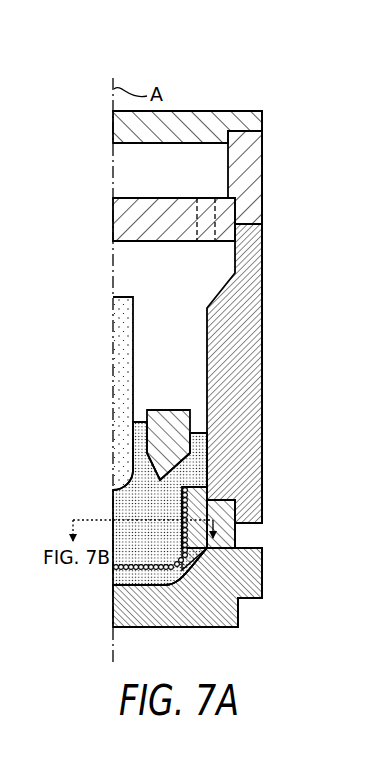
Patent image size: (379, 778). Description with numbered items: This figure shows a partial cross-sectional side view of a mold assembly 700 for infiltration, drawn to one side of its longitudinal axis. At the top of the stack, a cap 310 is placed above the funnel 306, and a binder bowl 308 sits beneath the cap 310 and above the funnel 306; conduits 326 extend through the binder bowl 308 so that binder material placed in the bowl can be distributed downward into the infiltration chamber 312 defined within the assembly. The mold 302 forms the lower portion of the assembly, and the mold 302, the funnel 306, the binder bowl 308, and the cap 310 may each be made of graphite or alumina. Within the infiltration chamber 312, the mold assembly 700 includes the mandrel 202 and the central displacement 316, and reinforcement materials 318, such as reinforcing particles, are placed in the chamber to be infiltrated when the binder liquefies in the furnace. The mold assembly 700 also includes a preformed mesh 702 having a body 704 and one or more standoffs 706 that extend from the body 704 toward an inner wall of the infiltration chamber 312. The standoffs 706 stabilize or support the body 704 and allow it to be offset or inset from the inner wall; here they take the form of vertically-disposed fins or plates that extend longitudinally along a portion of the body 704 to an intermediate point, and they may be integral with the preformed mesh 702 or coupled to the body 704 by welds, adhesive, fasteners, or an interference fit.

The mold assembly 700 is at (290, 136).
The cap 310 is at (184, 111).
The binder bowl 308 is at (263, 172).
The conduits 326 is at (197, 206).
The infiltration chamber 312 is at (183, 276).
The central displacement 316 is at (134, 325).
The funnel 306 is at (263, 370).
The mandrel 202 is at (183, 459).
The reinforcement materials 318 is at (127, 514).
The preformed mesh 702 is at (210, 490).
The standoffs 706 is at (220, 548).
The mold 302 is at (263, 573).
The body 704 is at (182, 572).